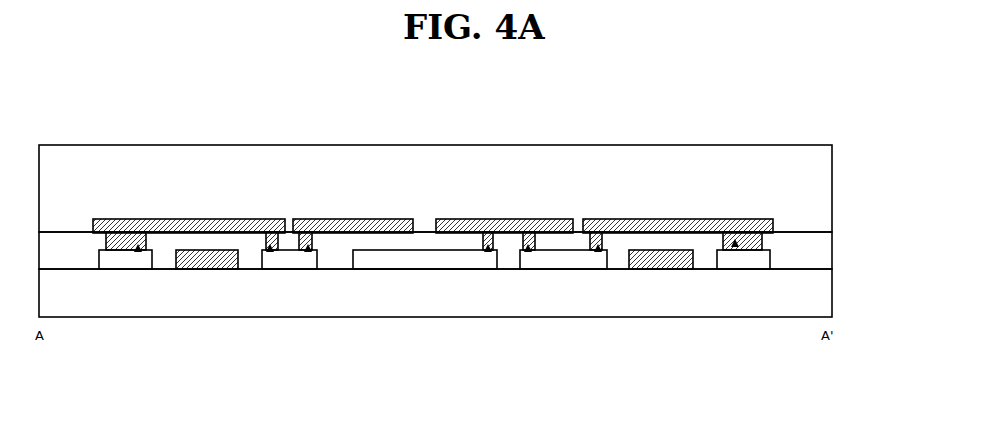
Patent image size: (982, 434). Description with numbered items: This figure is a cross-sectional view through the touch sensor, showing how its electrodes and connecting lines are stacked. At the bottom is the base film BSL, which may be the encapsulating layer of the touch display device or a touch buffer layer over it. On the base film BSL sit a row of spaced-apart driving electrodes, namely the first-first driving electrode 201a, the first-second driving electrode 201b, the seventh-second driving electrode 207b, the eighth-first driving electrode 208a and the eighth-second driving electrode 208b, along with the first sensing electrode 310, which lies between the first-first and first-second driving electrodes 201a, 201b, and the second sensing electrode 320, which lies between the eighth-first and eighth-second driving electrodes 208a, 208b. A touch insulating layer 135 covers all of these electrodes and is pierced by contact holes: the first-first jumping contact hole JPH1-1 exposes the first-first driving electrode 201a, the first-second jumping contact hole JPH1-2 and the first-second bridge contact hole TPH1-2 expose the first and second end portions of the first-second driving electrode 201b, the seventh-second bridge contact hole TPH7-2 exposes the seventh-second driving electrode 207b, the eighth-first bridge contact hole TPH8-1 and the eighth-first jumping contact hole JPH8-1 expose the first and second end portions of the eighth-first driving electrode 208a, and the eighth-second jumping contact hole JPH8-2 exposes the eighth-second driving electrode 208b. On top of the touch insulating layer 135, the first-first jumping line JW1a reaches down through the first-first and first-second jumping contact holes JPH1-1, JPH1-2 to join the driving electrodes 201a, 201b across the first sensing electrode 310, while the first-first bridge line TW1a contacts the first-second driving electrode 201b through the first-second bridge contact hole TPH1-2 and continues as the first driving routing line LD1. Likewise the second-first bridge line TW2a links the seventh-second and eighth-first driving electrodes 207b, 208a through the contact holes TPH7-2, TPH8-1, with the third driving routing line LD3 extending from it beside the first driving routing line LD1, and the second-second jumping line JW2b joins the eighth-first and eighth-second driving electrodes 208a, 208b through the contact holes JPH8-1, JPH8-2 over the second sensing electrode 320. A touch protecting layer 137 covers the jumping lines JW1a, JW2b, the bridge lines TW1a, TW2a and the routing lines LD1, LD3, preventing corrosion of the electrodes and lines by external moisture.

The touch protecting layer 137 is at (737, 157).
The touch insulating layer 135 is at (820, 252).
The base film BSL is at (820, 290).
The first-first jumping line JW1a is at (130, 220).
The first-first bridge line TW1a is at (312, 220).
The first driving routing line LD1 is at (368, 220).
The third driving routing line LD3 is at (452, 220).
The second-first bridge line TW2a is at (532, 220).
The second-second jumping line JW2b is at (663, 220).
The first-first driving electrode 201a is at (120, 258).
The first-second driving electrode 201b is at (297, 258).
The seventh-second driving electrode 207b is at (422, 258).
The eighth-first driving electrode 208a is at (565, 258).
The eighth-second driving electrode 208b is at (752, 258).
The first sensing electrode 310 is at (205, 258).
The second sensing electrode 320 is at (670, 258).
The first-first jumping contact hole JPH1-1 is at (138, 252).
The first-second jumping contact hole JPH1-2 is at (270, 252).
The first-second bridge contact hole TPH1-2 is at (308, 252).
The seventh-second bridge contact hole TPH7-2 is at (488, 252).
The eighth-first bridge contact hole TPH8-1 is at (528, 252).
The eighth-first jumping contact hole JPH8-1 is at (598, 252).
The eighth-second jumping contact hole JPH8-2 is at (735, 247).